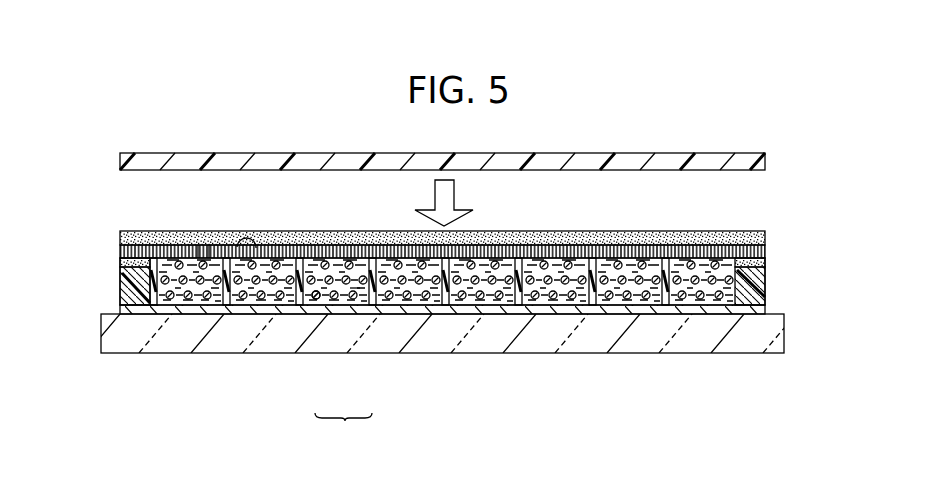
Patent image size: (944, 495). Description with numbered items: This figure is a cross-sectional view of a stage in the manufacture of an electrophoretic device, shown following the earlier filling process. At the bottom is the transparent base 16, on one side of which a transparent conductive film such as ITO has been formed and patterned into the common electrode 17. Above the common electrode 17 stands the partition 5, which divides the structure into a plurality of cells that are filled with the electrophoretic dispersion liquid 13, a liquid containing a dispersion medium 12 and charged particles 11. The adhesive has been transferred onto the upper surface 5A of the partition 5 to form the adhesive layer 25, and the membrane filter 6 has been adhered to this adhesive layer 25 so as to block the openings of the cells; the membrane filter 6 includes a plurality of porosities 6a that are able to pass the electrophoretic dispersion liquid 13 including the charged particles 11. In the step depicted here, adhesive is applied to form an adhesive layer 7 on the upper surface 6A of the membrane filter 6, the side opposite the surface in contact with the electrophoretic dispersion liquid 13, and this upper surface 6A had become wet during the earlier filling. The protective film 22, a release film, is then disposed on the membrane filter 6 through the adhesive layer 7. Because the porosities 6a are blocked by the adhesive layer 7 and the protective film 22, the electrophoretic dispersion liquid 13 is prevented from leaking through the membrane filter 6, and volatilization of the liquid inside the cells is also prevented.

The protective film 22 is at (767, 161).
The adhesive layer 7 is at (762, 242).
The membrane filter 6 is at (767, 254).
The porosities 6a is at (205, 253).
The partition 5 is at (760, 288).
The adhesive layer 25 is at (122, 259).
The upper surface 5A is at (136, 285).
The common electrode 17 is at (760, 312).
The transparent base 16 is at (772, 331).
The upper surface 6A is at (256, 248).
The charged particles 11 is at (316, 293).
The dispersion medium 12 is at (356, 290).
The electrophoretic dispersion liquid 13 is at (343, 430).